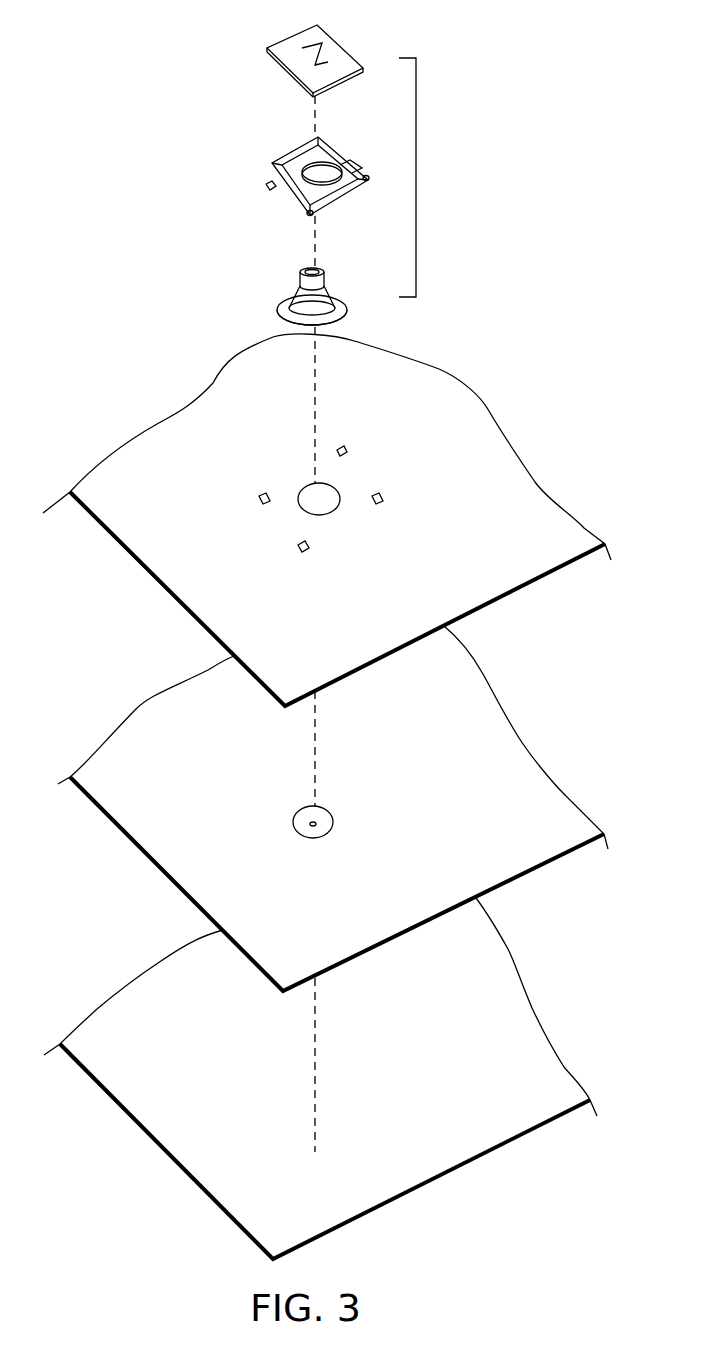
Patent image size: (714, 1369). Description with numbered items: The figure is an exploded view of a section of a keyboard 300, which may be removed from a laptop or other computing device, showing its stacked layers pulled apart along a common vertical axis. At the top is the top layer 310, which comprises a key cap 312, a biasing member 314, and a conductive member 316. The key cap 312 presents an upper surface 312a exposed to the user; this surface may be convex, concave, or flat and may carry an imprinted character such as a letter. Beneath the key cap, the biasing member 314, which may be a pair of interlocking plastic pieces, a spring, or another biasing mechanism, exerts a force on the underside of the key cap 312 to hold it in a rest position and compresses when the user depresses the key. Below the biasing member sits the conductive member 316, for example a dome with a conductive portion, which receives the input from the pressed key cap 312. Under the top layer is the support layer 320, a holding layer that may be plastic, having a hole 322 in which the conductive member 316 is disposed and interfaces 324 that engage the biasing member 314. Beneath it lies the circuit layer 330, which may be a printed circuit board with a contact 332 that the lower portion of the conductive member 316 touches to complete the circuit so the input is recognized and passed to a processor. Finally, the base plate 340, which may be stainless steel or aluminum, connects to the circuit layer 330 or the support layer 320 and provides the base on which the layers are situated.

The keyboard 300 is at (630, 105).
The top layer 310 is at (416, 182).
The key cap 312 is at (273, 58).
The upper surface 312a is at (332, 53).
The biasing member 314 is at (272, 165).
The conductive member 316 is at (281, 303).
The support layer 320 is at (155, 581).
The hole 322 is at (340, 496).
The interfaces 324 is at (312, 553).
The circuit layer 330 is at (151, 874).
The contacts 332 is at (336, 829).
The base plate 340 is at (145, 1138).